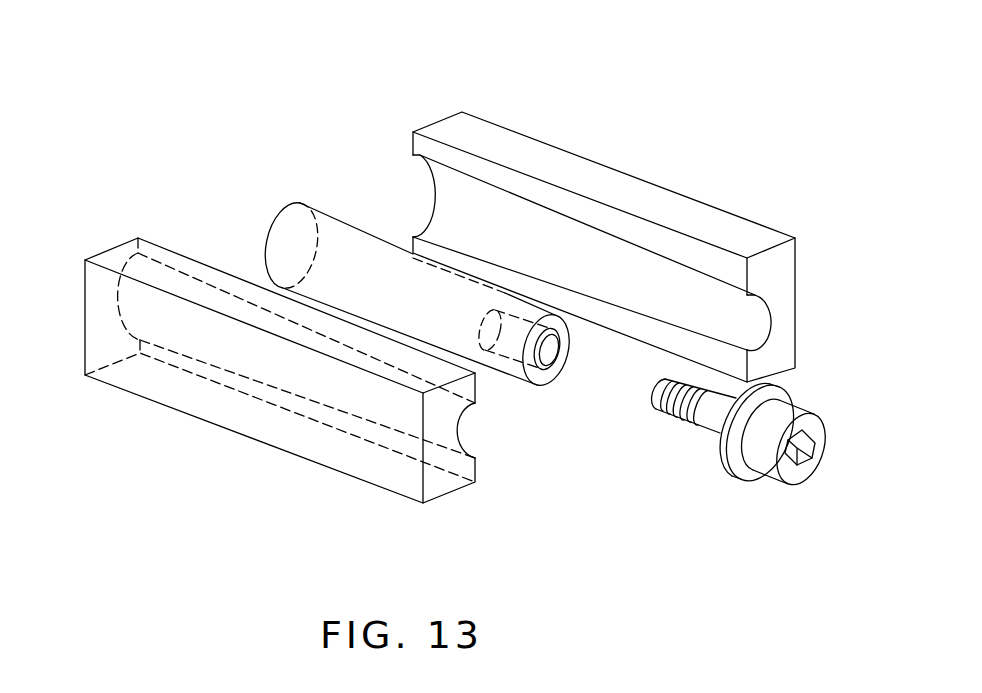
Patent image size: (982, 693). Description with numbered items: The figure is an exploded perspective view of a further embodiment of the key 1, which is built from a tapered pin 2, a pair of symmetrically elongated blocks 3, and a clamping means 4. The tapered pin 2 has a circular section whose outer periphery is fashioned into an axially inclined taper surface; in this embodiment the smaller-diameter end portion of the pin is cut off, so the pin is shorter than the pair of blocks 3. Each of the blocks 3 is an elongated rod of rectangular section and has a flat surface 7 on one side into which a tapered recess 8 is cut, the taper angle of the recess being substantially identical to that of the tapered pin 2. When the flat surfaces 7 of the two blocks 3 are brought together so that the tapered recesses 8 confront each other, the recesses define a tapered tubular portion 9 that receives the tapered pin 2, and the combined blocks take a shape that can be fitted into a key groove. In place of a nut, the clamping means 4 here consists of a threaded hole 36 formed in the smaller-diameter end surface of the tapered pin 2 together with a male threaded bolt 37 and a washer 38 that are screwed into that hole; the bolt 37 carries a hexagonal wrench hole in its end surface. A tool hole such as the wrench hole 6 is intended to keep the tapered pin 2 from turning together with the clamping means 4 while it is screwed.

The key 1 is at (420, 75).
The tapered pin 2 is at (425, 286).
The blocks 3 is at (422, 289).
The clamping means 4 is at (765, 452).
The wrench hole 6 is at (480, 468).
The flat surface 7 is at (707, 255).
The tapered recess 8 is at (557, 247).
The tapered tubular portion 9 is at (580, 293).
The threaded hole 36 is at (555, 362).
The bolt 37 is at (800, 473).
The washer 38 is at (745, 460).